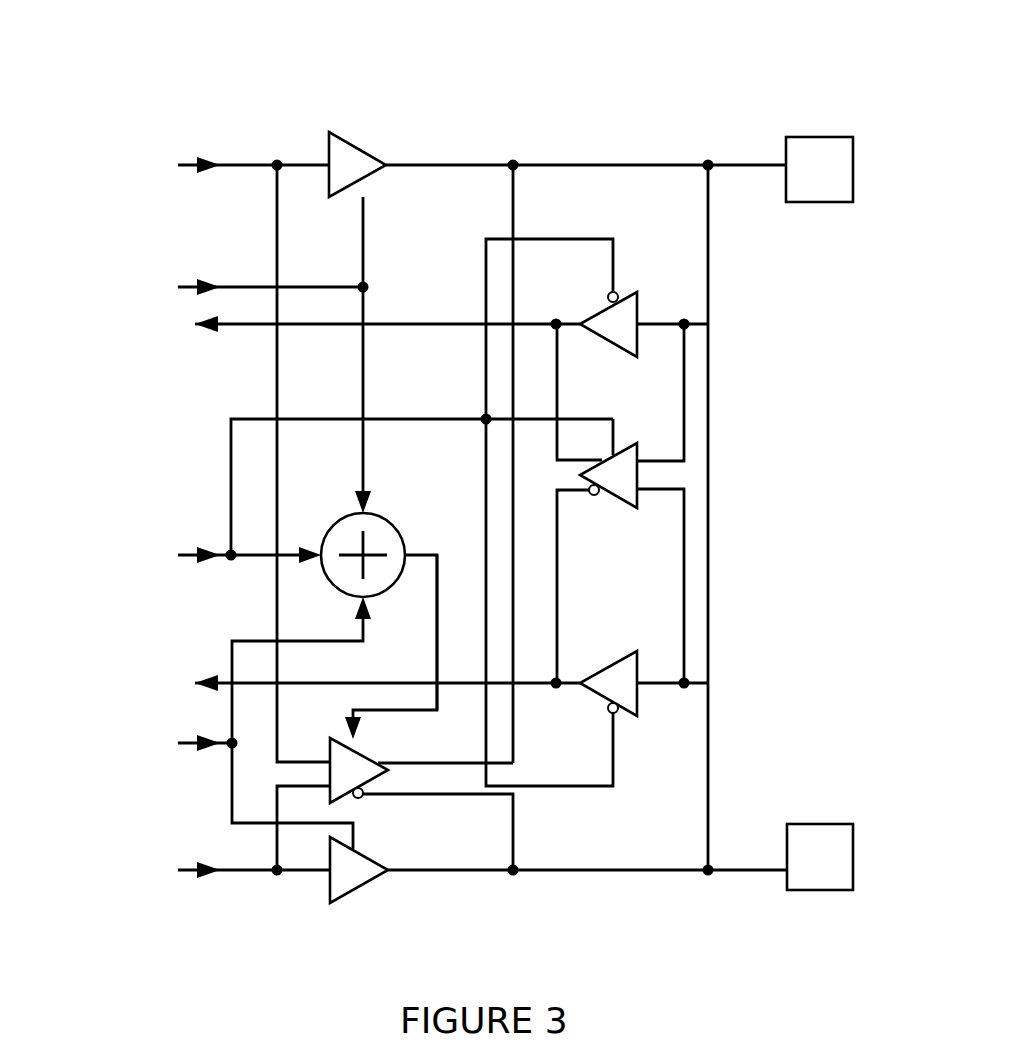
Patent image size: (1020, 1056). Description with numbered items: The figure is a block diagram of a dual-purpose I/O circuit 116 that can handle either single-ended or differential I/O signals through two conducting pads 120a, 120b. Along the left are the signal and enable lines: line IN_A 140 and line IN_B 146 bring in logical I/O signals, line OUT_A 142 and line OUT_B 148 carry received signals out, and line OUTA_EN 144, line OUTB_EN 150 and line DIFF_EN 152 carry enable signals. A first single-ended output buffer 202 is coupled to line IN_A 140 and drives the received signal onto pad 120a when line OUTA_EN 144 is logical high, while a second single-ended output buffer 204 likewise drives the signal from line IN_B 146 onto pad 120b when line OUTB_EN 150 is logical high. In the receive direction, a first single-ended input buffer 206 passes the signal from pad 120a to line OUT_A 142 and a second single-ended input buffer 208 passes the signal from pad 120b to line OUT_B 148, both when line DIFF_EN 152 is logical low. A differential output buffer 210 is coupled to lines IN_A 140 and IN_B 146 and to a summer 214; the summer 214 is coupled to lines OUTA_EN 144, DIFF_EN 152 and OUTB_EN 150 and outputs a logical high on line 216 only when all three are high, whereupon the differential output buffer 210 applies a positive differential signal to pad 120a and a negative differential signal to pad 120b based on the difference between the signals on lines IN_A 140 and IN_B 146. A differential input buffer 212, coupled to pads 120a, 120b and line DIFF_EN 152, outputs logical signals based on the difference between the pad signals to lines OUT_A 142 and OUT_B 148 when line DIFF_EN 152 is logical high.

The dual-purpose I/O circuit 116 is at (176, 110).
The conducting pad 120a is at (853, 172).
The conducting pad 120b is at (845, 864).
The line IN_A 140 is at (232, 167).
The line OUT_A 142 is at (232, 327).
The line OUTA_EN 144 is at (222, 285).
The line IN_B 146 is at (183, 868).
The line OUT_B 148 is at (183, 676).
The line OUTB_EN 150 is at (186, 746).
The line DIFF_EN 152 is at (236, 558).
The first single-ended output buffer 202 is at (363, 160).
The second single-ended output buffer 204 is at (368, 860).
The first single-ended input buffer 206 is at (631, 343).
The second single-ended input buffer 208 is at (629, 717).
The differential output buffer 210 is at (354, 768).
The differential input buffer 212 is at (629, 510).
The summer 214 is at (386, 528).
The line 216 is at (437, 653).